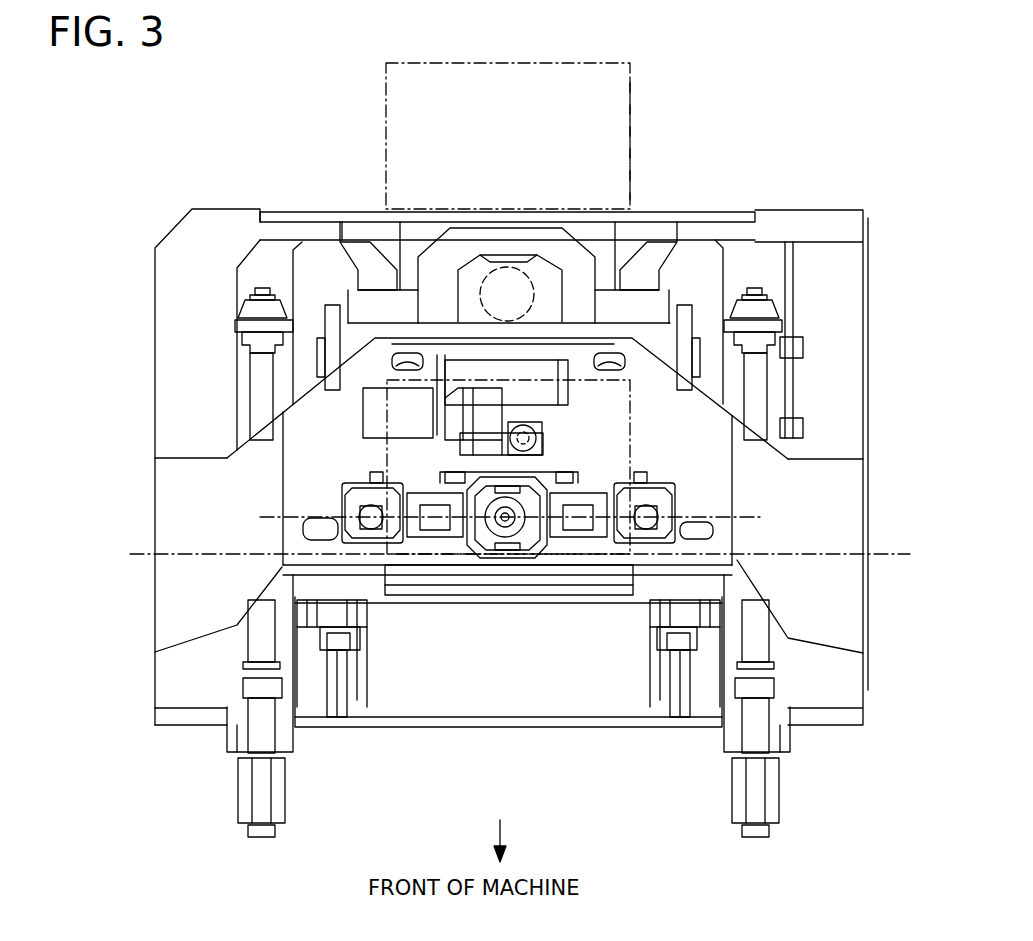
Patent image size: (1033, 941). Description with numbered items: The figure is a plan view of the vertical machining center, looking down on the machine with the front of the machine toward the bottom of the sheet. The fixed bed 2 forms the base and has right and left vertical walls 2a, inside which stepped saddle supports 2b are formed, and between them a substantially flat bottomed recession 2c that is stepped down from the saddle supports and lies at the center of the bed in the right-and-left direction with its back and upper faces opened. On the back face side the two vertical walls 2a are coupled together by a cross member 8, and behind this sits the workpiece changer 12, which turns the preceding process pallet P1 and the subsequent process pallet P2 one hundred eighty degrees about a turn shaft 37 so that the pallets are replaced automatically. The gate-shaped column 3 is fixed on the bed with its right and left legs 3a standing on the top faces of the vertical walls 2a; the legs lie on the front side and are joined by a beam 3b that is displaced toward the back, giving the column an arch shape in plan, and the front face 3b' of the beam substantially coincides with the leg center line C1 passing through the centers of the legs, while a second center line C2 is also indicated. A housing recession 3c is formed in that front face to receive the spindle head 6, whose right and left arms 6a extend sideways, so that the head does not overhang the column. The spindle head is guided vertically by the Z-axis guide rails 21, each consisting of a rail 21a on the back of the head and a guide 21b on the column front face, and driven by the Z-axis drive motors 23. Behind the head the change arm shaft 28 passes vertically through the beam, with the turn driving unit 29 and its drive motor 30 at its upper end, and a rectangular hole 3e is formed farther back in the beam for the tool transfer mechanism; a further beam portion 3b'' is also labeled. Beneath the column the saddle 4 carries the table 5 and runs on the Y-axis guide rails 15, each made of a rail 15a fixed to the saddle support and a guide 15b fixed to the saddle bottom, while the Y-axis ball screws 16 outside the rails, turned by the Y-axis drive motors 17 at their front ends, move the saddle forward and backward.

The fixed bed 2 is at (148, 288).
The vertical walls 2a is at (158, 332).
The saddle supports 2b is at (303, 707).
The bottomed recession 2c is at (568, 707).
The column 3 is at (190, 456).
The legs 3a is at (166, 457).
The beam 3b is at (520, 281).
The front face of the beam 3b' is at (556, 389).
The carriage guide bracket 3b'' is at (642, 248).
The housing recession 3c is at (412, 485).
The rectangular hole 3e is at (552, 362).
The saddle 4 is at (521, 608).
The table 5 is at (493, 596).
The spindle head 6 is at (550, 555).
The arms 6a is at (430, 545).
The cross member 8 is at (318, 213).
The workpiece changer 12 is at (370, 139).
The Y-axis guide rails 15 is at (440, 637).
The rail 15a is at (343, 677).
The guide 15b is at (343, 637).
The Y-axis ball screws 16 is at (250, 387).
The Y-axis drive motors 17 is at (240, 788).
The Z-axis guide rails 21 is at (627, 408).
The rail 21a is at (562, 465).
The guide 21b is at (573, 465).
The Z-axis drive motors 23 is at (345, 493).
The change arm shaft 28 is at (507, 407).
The turn driving unit 29 is at (490, 415).
The drive motor 30 is at (368, 392).
The turn shaft 37 is at (520, 280).
The leg center line C1 is at (150, 554).
The center line C2 is at (283, 517).
The preceding process pallet P1 is at (640, 437).
The subsequent process pallet P2 is at (635, 117).